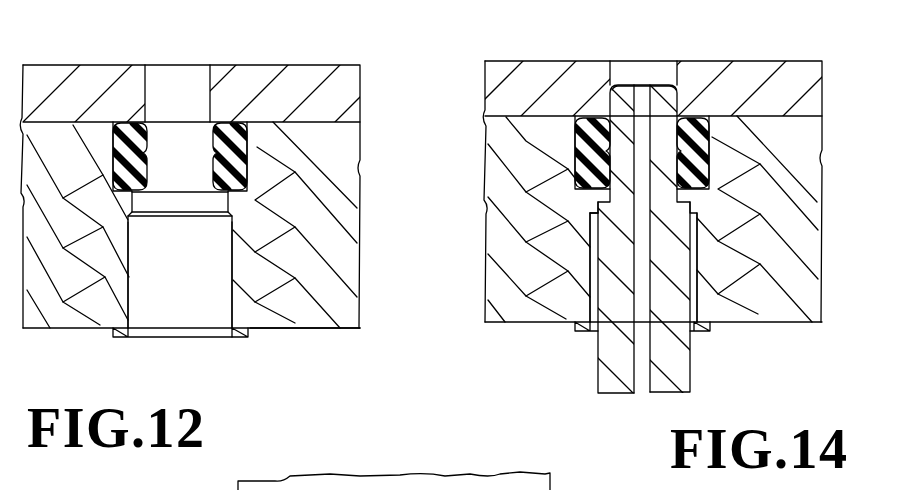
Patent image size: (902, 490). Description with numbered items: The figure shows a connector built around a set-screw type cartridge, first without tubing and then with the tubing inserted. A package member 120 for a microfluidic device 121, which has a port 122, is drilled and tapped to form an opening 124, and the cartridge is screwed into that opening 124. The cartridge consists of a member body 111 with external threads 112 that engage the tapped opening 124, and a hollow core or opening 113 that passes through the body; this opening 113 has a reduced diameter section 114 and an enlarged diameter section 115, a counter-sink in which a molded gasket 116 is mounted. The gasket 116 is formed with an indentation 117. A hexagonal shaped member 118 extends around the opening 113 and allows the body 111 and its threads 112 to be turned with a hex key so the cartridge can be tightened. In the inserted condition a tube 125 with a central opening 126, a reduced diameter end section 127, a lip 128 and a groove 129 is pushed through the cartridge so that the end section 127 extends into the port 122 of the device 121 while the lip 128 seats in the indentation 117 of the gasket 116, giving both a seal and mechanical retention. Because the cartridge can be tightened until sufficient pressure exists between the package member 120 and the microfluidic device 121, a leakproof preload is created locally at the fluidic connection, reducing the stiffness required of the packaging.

In FIG. 12, the member body 111 is at (272, 318).
In FIG. 14, the member body 111 is at (565, 307).
In FIG. 12, the external threads 112 is at (293, 217).
In FIG. 14, the external threads 112 is at (767, 263).
In FIG. 12, the opening 113 is at (130, 288).
In FIG. 14, the opening 113 is at (700, 290).
In FIG. 12, the reduced diameter section 114 is at (217, 203).
In FIG. 12, the enlarged diameter section 115 is at (232, 148).
In FIG. 12, the molded gasket 116 is at (152, 122).
In FIG. 14, the molded gasket 116 is at (587, 137).
In FIG. 12, the indentation 117 is at (143, 160).
In FIG. 14, the indentation 117 is at (710, 143).
In FIG. 12, the hexagonal shaped member 118 is at (115, 335).
In FIG. 14, the hexagonal shaped member 118 is at (577, 333).
In FIG. 12, the package member 120 is at (362, 288).
In FIG. 14, the package member 120 is at (822, 198).
In FIG. 12, the microfluidic device 121 is at (378, 90).
In FIG. 14, the microfluidic device 121 is at (823, 84).
In FIG. 12, the port 122 is at (163, 78).
In FIG. 14, the port 122 is at (626, 75).
In FIG. 12, the opening 124 is at (292, 330).
In FIG. 14, the tube 125 is at (690, 368).
In FIG. 14, the central opening 126 is at (643, 386).
In FIG. 14, the reduced diameter end section 127 is at (666, 86).
In FIG. 14, the lip 128 is at (604, 146).
In FIG. 14, the groove 129 is at (568, 215).